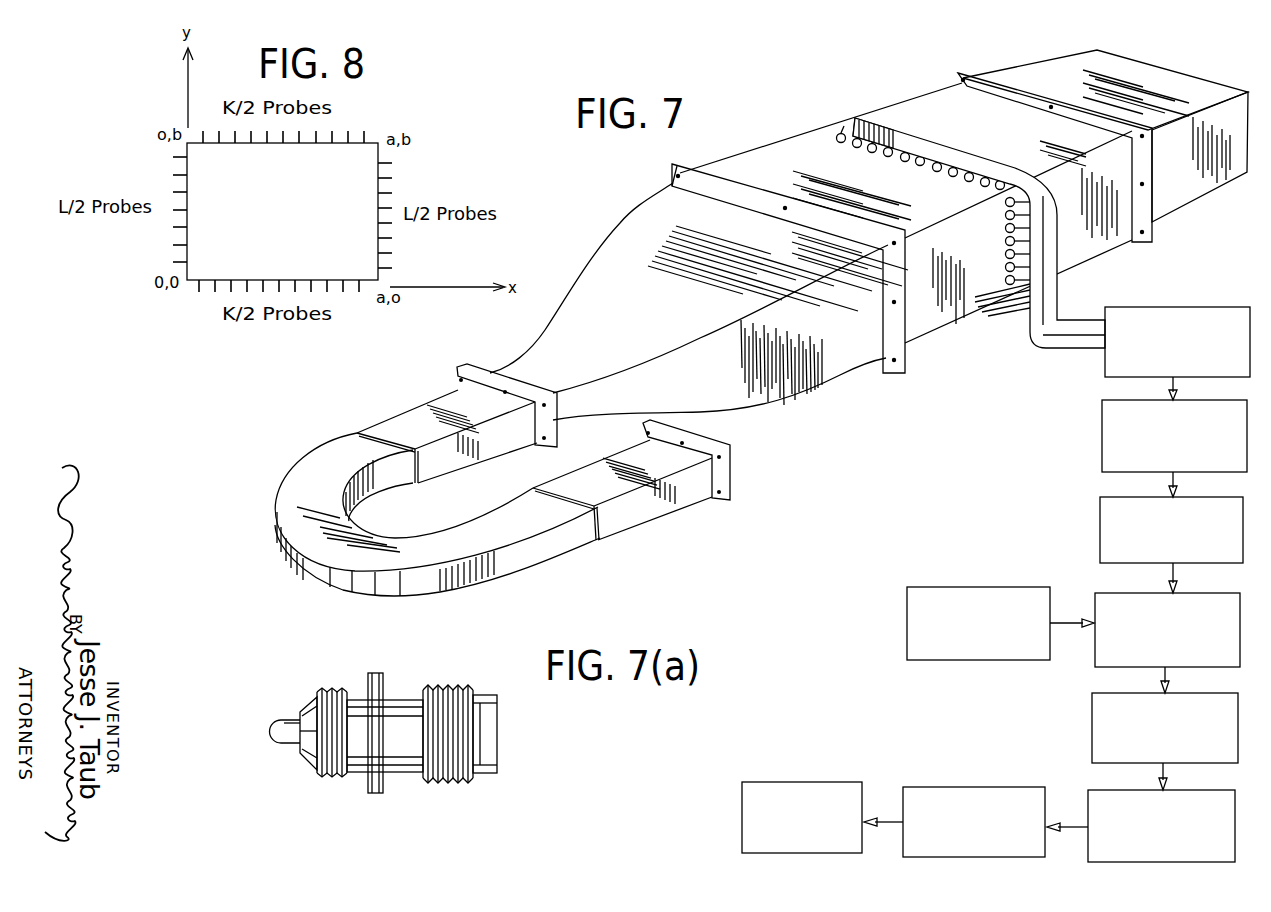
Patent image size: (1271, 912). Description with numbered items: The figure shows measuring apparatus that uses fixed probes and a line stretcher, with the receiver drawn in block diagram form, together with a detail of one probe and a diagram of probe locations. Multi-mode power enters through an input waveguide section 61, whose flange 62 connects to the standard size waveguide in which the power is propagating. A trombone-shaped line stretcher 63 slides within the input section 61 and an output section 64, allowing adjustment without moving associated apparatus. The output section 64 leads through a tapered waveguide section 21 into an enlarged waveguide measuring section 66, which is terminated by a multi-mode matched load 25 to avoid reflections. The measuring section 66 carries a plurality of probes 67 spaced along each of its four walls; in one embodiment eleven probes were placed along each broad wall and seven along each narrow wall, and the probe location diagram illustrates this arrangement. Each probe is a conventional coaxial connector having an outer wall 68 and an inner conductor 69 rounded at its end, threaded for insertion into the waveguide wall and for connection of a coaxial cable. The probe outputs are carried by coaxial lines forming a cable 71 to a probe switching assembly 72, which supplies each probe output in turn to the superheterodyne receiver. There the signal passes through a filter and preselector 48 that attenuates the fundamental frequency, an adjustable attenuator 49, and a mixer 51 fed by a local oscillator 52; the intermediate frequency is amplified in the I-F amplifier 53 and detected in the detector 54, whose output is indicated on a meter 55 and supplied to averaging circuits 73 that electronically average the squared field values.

In FIG. 7, the tapered waveguide section 21 is at (628, 238).
In FIG. 7, the multi-mode matched load 25 is at (1035, 80).
In FIG. 7, the filter and preselector 48 is at (1105, 433).
In FIG. 7, the attenuator 49 is at (1102, 514).
In FIG. 7, the mixer 51 is at (1111, 600).
In FIG. 7, the local oscillator 52 is at (969, 594).
In FIG. 7, the I-F amplifier 53 is at (1094, 716).
In FIG. 7, the detector 54 is at (1108, 796).
In FIG. 7, the meter 55 is at (808, 783).
In FIG. 7, the input waveguide section 61 is at (655, 505).
In FIG. 7, the flange 62 is at (731, 470).
In FIG. 7, the line stretcher 63 is at (298, 494).
In FIG. 7, the output section 64 is at (425, 422).
In FIG. 7, the enlarged waveguide measuring section 66 is at (790, 160).
In FIG. 7a, the probes 67 is at (480, 695).
In FIG. 7, the probes 67 is at (937, 171).
In FIG. 7a, the outer wall 68 is at (358, 690).
In FIG. 7a, the inner conductor 69 is at (275, 722).
In FIG. 7, the cable 71 is at (1040, 331).
In FIG. 7, the probe switching assembly 72 is at (1177, 305).
In FIG. 7, the averaging circuits 73 is at (964, 788).